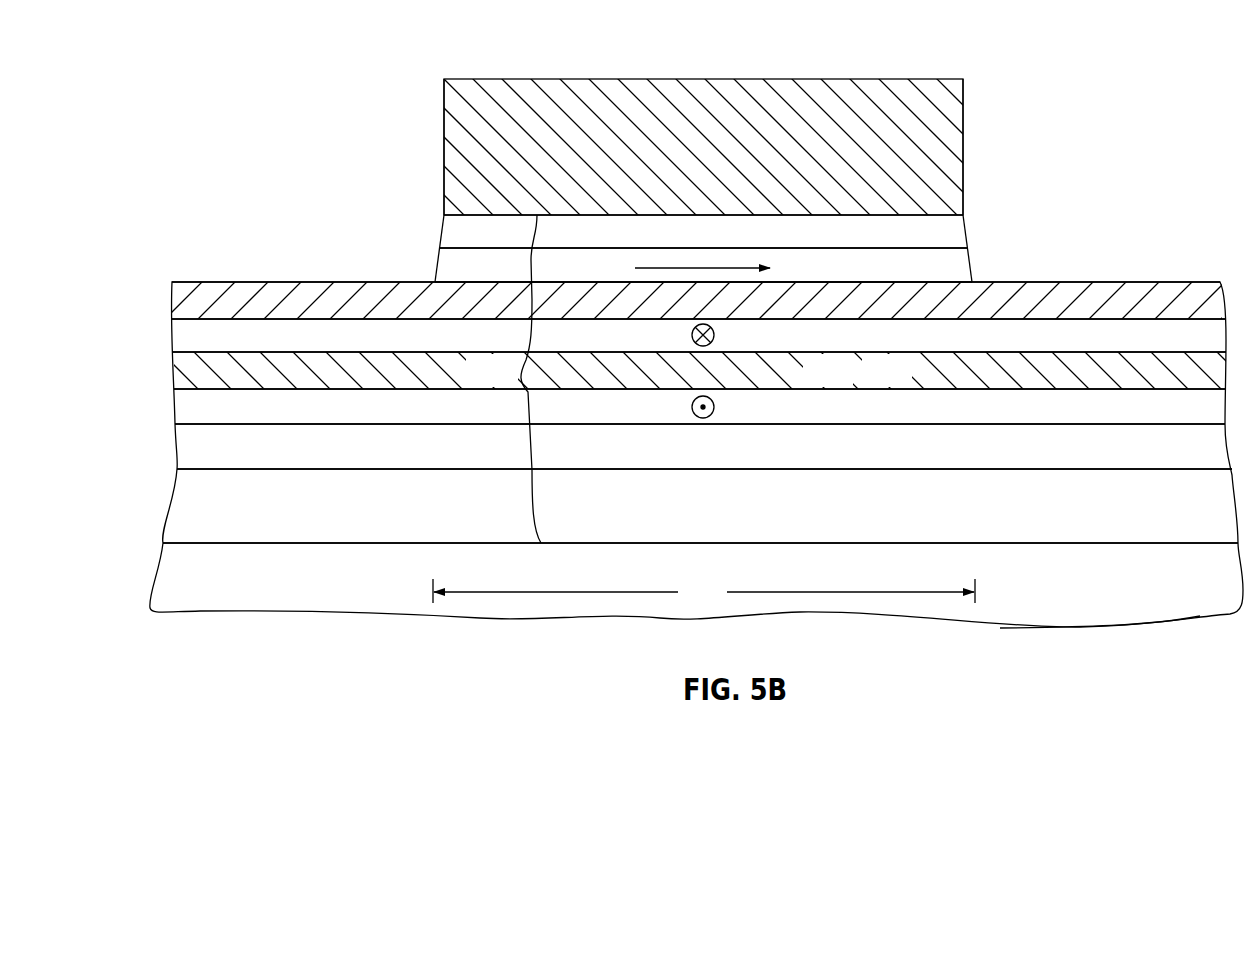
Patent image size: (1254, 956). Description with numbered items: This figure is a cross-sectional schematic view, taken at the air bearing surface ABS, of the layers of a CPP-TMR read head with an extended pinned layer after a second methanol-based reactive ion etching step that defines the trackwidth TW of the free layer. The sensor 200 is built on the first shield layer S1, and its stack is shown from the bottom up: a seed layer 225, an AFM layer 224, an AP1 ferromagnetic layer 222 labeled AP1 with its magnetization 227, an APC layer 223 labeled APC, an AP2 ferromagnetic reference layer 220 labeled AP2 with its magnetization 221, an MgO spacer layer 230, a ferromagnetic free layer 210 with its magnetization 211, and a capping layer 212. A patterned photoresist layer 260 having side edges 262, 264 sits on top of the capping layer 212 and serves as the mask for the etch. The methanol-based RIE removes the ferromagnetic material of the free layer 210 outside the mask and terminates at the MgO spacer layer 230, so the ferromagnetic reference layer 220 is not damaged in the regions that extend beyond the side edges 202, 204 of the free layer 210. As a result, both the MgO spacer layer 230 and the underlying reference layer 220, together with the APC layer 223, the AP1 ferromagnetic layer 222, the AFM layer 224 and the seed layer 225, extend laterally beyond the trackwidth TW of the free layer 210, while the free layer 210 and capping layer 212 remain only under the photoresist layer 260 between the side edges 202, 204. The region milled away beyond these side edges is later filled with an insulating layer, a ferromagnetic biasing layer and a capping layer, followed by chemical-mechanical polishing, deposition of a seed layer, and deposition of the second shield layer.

The sensor 200 is at (696, 421).
The side edge of free layer 202 is at (436, 268).
The side edge of free layer 204 is at (972, 268).
The ferromagnetic free layer 210 is at (905, 281).
The magnetization of free layer 211 is at (654, 262).
The capping layer 212 is at (905, 245).
The AP2 ferromagnetic reference layer 220 is at (905, 350).
The magnetization of AP2 reference layer 221 is at (714, 334).
The AP1 ferromagnetic layer 222 is at (905, 421).
The APC layer 223 is at (905, 386).
The AFM layer 224 is at (905, 461).
The seed layer 225 is at (905, 523).
The magnetization of AP1 layer 227 is at (714, 406).
The MgO spacer layer 230 is at (905, 314).
The photoresist layer 260 is at (896, 97).
The side edge of photoresist layer 262 is at (444, 148).
The side edge of photoresist layer 264 is at (963, 148).
The first shield layer S1 is at (1182, 596).
The air bearing surface ABS is at (1140, 594).
The trackwidth TW is at (704, 594).
The AP1 ferromagnetic layer AP1 is at (846, 421).
The AP2 ferromagnetic reference layer AP2 is at (848, 350).
The APC layer APC is at (850, 386).